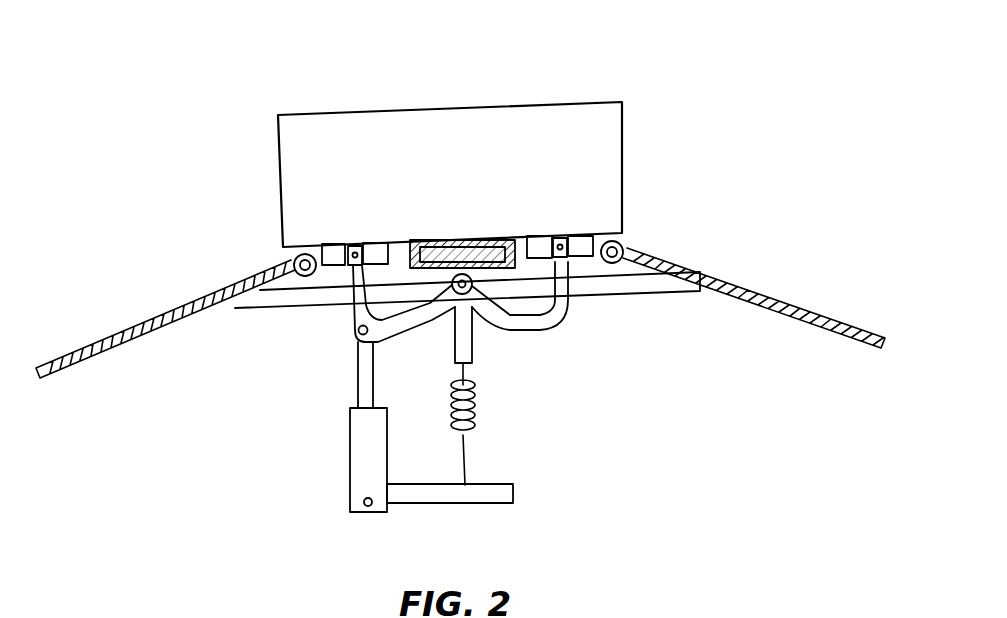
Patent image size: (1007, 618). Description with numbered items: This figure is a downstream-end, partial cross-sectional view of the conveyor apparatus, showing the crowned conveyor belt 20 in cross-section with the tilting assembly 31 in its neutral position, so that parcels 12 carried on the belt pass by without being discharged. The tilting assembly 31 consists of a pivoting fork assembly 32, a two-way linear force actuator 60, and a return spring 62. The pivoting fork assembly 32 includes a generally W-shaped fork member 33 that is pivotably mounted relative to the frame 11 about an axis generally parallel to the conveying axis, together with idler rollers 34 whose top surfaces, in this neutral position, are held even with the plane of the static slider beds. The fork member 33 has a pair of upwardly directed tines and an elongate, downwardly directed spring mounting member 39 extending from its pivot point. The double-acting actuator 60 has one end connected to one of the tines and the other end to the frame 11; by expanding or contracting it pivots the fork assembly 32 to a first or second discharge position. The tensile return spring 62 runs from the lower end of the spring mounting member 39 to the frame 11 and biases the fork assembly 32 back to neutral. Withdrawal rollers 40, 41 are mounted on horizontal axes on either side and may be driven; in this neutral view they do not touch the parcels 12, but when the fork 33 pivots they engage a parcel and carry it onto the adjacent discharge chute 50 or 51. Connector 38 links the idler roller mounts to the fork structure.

The frame 11 is at (657, 282).
The parcels 12 is at (570, 118).
The crowned conveyor belt 20 is at (452, 240).
The tilting assembly 31 is at (223, 490).
The pivoting fork assembly 32 is at (287, 355).
The fork member 33 is at (535, 325).
The idler rollers 34 is at (335, 250).
The connector 38 is at (560, 237).
The spring mounting member 39 is at (457, 352).
The withdrawal roller 40 is at (292, 260).
The withdrawal roller 41 is at (622, 250).
The discharge chute 50 is at (175, 310).
The discharge chute 51 is at (703, 275).
The linear force actuator 60 is at (357, 472).
The return spring 62 is at (478, 425).